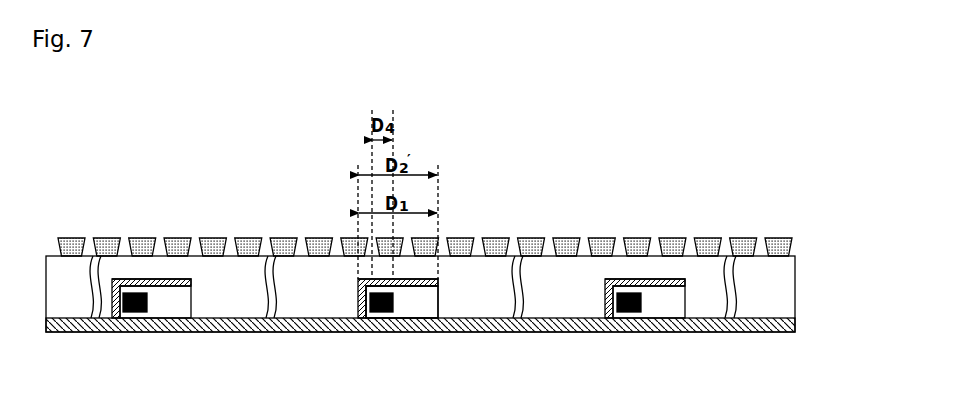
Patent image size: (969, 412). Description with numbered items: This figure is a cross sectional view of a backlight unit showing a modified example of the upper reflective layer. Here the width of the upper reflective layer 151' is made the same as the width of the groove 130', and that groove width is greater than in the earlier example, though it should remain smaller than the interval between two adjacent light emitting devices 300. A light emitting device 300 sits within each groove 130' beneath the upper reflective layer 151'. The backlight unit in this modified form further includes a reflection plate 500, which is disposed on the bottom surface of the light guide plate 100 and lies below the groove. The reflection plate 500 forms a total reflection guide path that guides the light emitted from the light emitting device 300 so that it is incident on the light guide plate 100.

The light guide plate 100 is at (799, 284).
The reflection plate 500 is at (797, 322).
The light emitting device 300 is at (373, 312).
The groove 130' is at (402, 343).
The upper reflective layer 151' is at (402, 329).